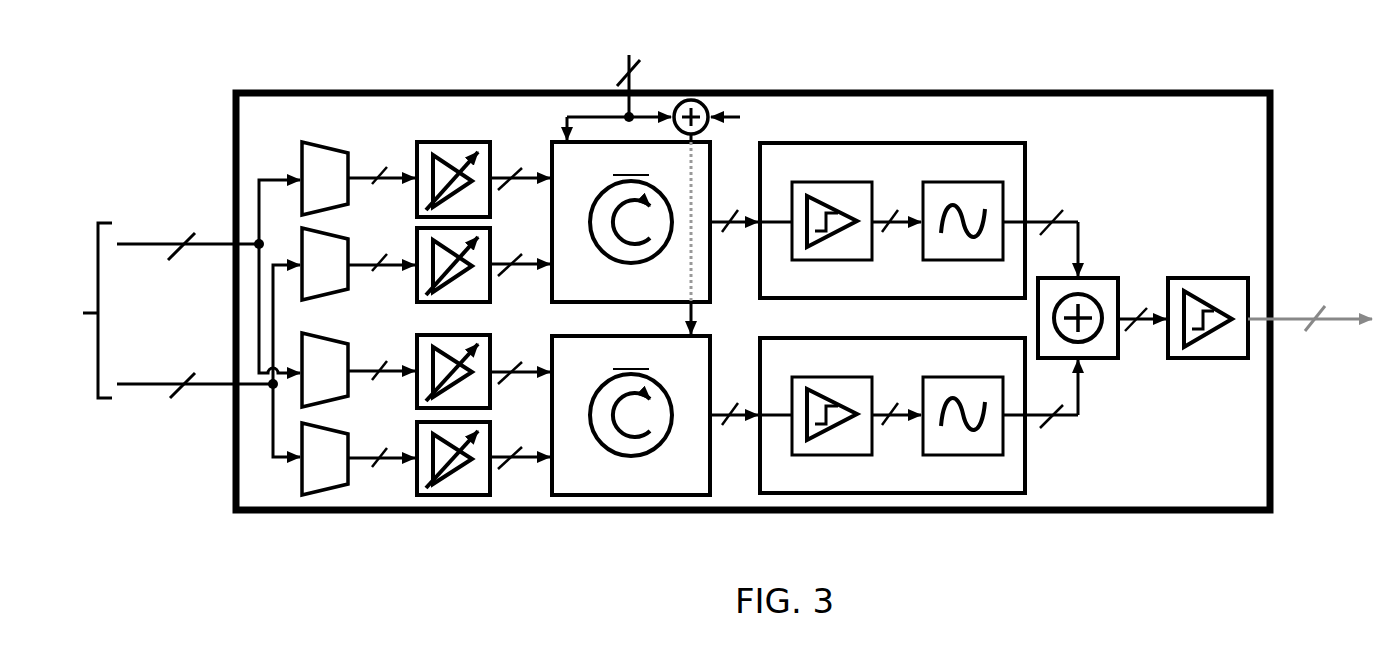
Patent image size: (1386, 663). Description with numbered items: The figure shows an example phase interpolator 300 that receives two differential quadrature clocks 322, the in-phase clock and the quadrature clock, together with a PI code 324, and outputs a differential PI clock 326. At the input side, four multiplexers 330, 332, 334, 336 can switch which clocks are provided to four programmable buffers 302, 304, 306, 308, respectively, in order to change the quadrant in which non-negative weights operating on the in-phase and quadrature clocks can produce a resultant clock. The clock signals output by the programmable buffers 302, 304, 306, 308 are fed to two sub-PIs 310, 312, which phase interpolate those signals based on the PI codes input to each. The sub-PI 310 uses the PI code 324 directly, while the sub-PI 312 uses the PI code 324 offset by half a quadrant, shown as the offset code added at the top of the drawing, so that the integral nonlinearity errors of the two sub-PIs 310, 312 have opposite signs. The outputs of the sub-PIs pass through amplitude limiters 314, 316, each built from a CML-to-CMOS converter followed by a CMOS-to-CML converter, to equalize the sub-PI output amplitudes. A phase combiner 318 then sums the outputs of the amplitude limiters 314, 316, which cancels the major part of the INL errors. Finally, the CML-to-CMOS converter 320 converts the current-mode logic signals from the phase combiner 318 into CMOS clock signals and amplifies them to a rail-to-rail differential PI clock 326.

The phase interpolator 300 is at (1208, 186).
The programmable buffer 302 is at (492, 160).
The programmable buffer 304 is at (492, 247).
The programmable buffer 306 is at (492, 355).
The programmable buffer 308 is at (492, 443).
The sub-PI 310 is at (631, 222).
The sub-PI 312 is at (631, 398).
The amplitude limiter 314 is at (1028, 150).
The amplitude limiter 316 is at (1025, 460).
The phase combiner 318 is at (1107, 277).
The CML-to-CMOS converter 320 is at (1195, 277).
The differential quadrature clocks 322 is at (166, 318).
The PI code 324 is at (655, 72).
The differential PI clock 326 is at (1342, 333).
The multiplexer 330 is at (348, 153).
The multiplexer 332 is at (302, 292).
The multiplexer 334 is at (348, 344).
The multiplexer 336 is at (300, 475).